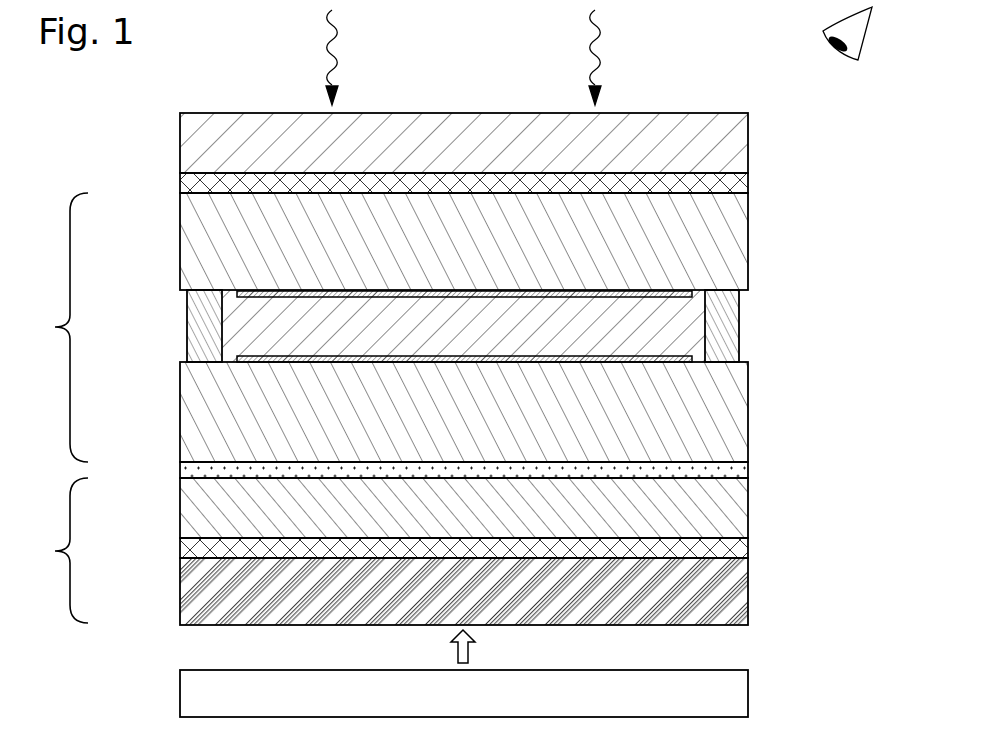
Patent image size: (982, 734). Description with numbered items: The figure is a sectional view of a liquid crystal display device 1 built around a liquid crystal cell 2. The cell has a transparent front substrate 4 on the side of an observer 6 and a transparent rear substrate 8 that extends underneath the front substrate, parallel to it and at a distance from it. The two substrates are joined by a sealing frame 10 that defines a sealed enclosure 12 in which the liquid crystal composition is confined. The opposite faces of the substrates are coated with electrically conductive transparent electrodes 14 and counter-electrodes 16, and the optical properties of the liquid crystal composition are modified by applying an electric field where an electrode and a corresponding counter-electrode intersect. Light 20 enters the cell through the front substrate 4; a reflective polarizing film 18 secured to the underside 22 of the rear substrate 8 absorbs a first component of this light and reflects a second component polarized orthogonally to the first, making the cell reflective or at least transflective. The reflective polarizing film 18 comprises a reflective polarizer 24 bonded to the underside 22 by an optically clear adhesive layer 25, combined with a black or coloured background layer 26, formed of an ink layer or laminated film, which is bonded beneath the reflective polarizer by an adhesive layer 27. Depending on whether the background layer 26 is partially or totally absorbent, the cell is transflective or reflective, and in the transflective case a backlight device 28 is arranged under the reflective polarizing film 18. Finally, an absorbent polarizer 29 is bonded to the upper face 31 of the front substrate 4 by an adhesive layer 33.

The liquid crystal display device 1 is at (766, 74).
The liquid crystal cell 2 is at (56, 327).
The transparent front substrate 4 is at (730, 240).
The observer 6 is at (860, 44).
The rear substrate 8 is at (730, 413).
The sealing frame 10 is at (720, 328).
The sealed enclosure 12 is at (394, 318).
The electrodes 14 is at (257, 295).
The counter-electrodes 16 is at (258, 362).
The reflective polarizing film 18 is at (54, 550).
The light 20 is at (330, 40).
The underside of rear substrate 22 is at (697, 462).
The reflective polarizer 24 is at (728, 513).
The adhesive layer 25 is at (192, 468).
The background layer 26 is at (728, 583).
The adhesive layer 27 is at (192, 551).
The backlight device 28 is at (728, 695).
The absorbent polarizer 29 is at (738, 128).
The upper face of front substrate 31 is at (512, 193).
The adhesive layer 33 is at (738, 182).